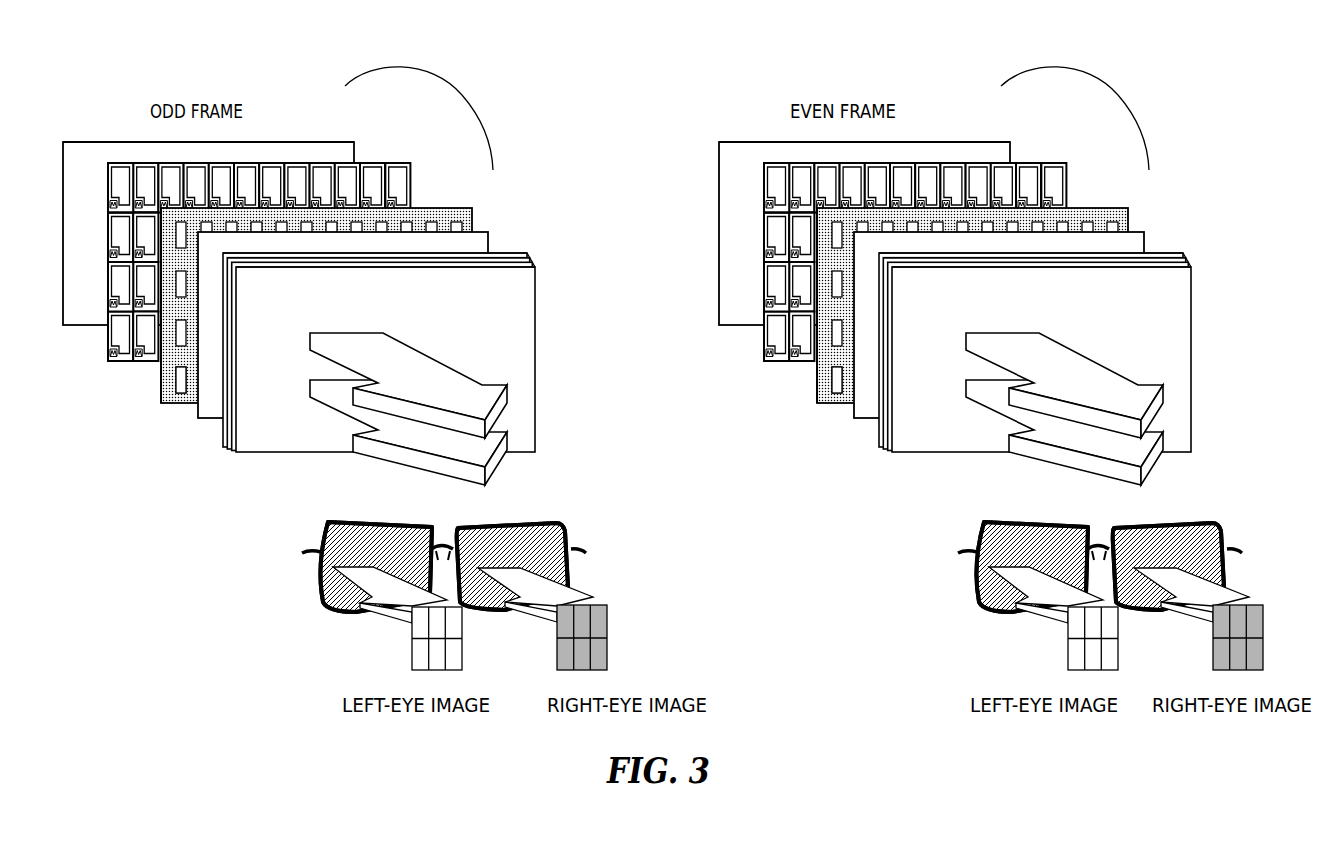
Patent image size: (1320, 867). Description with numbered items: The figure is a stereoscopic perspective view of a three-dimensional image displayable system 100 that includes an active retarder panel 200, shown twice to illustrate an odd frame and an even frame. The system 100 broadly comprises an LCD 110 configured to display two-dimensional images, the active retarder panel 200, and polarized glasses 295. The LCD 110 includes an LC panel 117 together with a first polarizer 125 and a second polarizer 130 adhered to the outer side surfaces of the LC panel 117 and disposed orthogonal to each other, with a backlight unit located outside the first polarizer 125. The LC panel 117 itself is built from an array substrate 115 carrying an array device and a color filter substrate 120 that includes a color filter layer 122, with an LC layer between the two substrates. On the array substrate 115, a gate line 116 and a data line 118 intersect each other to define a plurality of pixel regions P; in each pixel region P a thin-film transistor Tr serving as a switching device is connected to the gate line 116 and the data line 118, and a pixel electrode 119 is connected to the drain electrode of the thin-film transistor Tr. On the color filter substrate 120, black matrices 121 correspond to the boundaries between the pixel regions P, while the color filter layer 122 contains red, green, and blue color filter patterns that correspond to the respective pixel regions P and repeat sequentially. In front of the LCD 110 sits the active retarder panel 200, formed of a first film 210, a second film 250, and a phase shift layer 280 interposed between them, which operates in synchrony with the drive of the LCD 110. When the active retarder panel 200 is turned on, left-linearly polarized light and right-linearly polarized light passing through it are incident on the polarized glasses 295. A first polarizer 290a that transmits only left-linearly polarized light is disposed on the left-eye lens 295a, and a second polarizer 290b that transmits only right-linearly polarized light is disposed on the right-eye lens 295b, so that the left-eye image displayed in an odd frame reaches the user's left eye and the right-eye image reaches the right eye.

The 3D image displayable system 100 is at (523, 102).
The LCD 110 is at (437, 102).
The array substrate 115 is at (377, 162).
The gate line 116 is at (118, 212).
The LC panel 117 is at (447, 148).
The data line 118 is at (134, 182).
The pixel electrode 119 is at (118, 188).
The color filter substrate 120 is at (440, 207).
The black matrix 121 is at (161, 364).
The color filter layer 122 is at (180, 384).
The first polarizer 125 is at (335, 142).
The second polarizer 130 is at (478, 237).
The active retarder panel 200 is at (598, 208).
The first film 210 is at (525, 254).
The second film 250 is at (530, 263).
The phase shift layer 280 is at (525, 257).
The first polarizer 290a is at (377, 537).
The second polarizer 290b is at (520, 537).
The polarized glasses 295 is at (554, 508).
The left-eye lens 295a is at (318, 535).
The right-eye lens 295b is at (568, 535).
The pixel region P is at (104, 281).
The thin-film transistor Tr is at (108, 205).